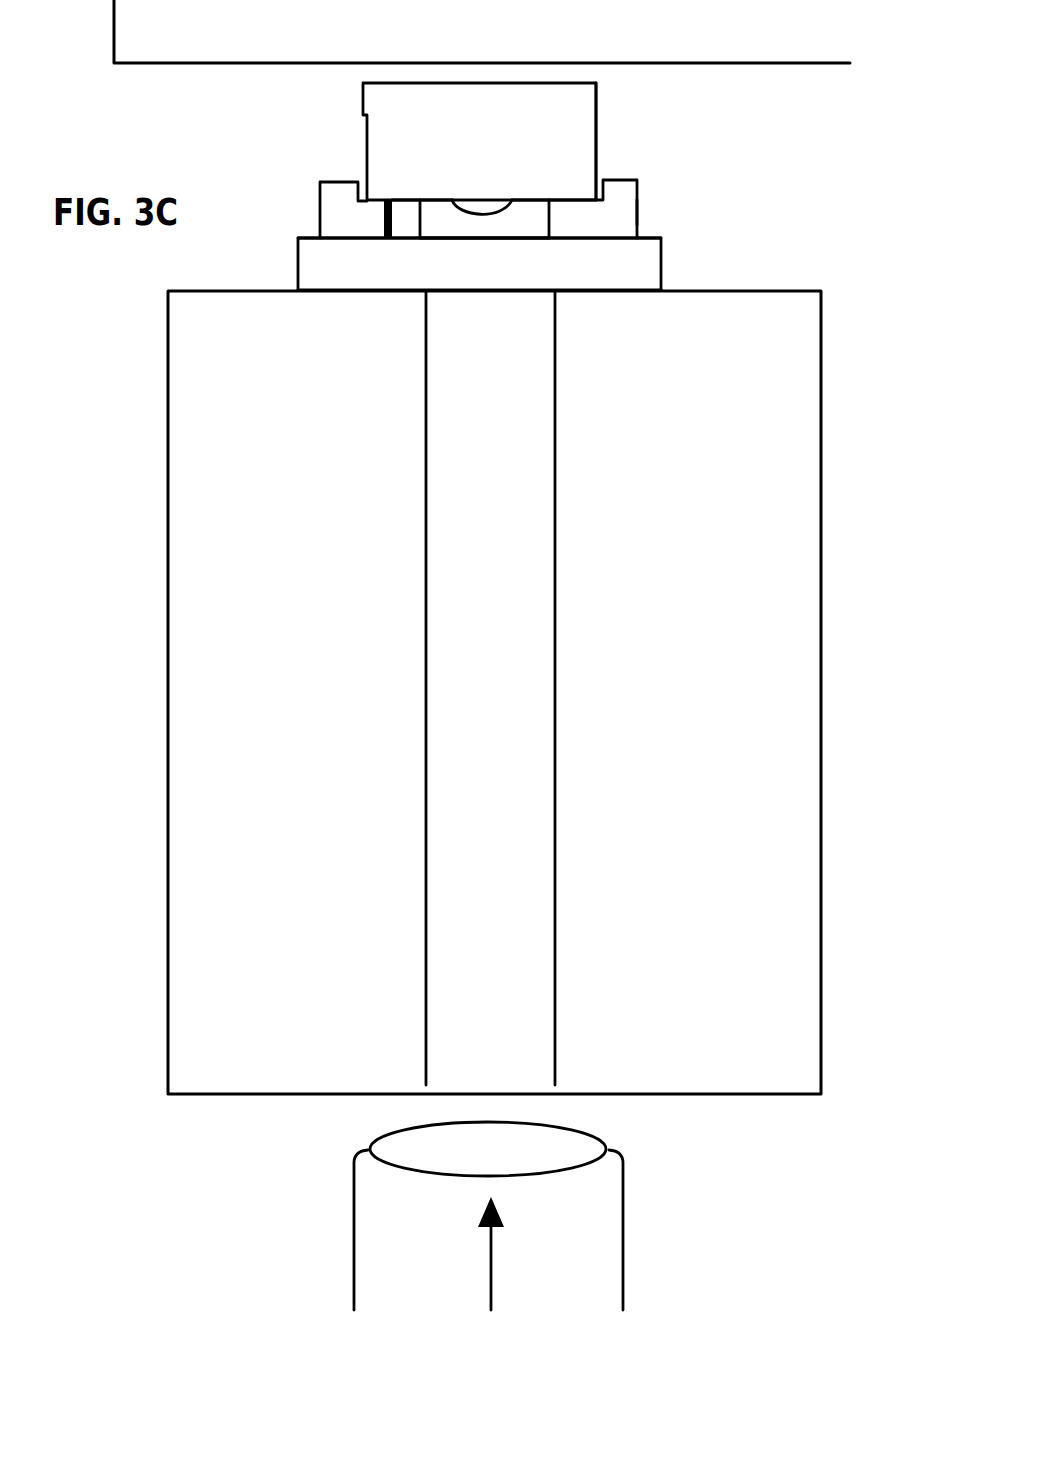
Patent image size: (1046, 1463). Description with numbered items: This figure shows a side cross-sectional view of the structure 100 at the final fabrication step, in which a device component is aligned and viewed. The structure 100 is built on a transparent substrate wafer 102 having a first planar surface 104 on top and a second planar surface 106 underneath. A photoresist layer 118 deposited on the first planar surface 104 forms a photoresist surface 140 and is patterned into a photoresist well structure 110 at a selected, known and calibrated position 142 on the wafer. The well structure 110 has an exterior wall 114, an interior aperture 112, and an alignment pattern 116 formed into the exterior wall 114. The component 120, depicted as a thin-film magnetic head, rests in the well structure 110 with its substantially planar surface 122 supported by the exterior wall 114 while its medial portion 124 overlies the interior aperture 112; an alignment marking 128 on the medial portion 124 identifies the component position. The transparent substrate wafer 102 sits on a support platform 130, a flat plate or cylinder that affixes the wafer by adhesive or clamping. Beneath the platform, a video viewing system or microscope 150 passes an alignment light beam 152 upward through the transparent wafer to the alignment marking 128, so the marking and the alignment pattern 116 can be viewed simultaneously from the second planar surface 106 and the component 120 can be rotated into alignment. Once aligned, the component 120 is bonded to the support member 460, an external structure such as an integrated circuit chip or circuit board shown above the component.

The structure 100 is at (768, 249).
The transparent substrate wafer 102 is at (661, 279).
The first planar surface 104 is at (637, 238).
The second planar surface 106 is at (510, 280).
The photoresist well structure 110 is at (635, 180).
The interior aperture 112 is at (452, 221).
The exterior wall 114 is at (637, 213).
The alignment pattern 116 is at (392, 238).
The photoresist layer 118 is at (403, 210).
The component 120 is at (367, 127).
The substantially planar surface 122 is at (587, 200).
The medial portion 124 is at (515, 197).
The alignment marking 128 is at (493, 211).
The support platform 130 is at (168, 438).
The photoresist surface 140 is at (330, 182).
The position 142 is at (568, 238).
The video viewing system or microscope 150 is at (623, 1247).
The alignment light beam 152 is at (491, 1289).
The support member 460 is at (143, 64).